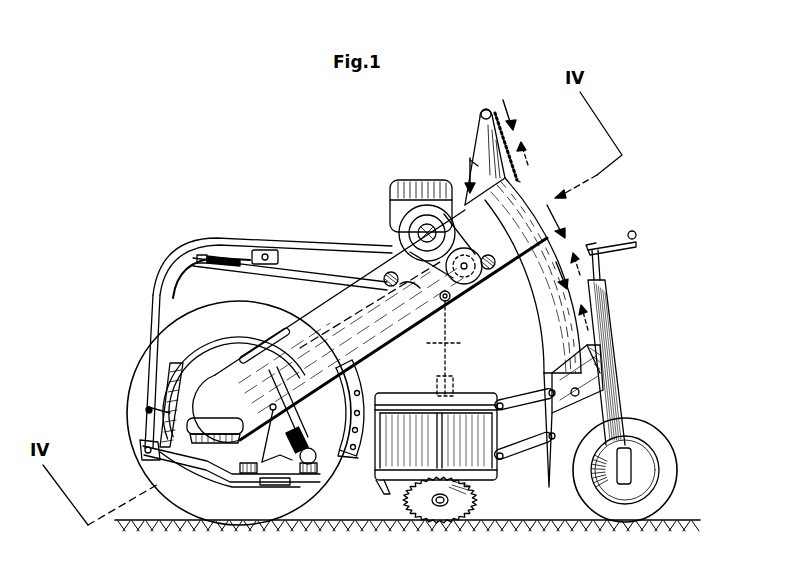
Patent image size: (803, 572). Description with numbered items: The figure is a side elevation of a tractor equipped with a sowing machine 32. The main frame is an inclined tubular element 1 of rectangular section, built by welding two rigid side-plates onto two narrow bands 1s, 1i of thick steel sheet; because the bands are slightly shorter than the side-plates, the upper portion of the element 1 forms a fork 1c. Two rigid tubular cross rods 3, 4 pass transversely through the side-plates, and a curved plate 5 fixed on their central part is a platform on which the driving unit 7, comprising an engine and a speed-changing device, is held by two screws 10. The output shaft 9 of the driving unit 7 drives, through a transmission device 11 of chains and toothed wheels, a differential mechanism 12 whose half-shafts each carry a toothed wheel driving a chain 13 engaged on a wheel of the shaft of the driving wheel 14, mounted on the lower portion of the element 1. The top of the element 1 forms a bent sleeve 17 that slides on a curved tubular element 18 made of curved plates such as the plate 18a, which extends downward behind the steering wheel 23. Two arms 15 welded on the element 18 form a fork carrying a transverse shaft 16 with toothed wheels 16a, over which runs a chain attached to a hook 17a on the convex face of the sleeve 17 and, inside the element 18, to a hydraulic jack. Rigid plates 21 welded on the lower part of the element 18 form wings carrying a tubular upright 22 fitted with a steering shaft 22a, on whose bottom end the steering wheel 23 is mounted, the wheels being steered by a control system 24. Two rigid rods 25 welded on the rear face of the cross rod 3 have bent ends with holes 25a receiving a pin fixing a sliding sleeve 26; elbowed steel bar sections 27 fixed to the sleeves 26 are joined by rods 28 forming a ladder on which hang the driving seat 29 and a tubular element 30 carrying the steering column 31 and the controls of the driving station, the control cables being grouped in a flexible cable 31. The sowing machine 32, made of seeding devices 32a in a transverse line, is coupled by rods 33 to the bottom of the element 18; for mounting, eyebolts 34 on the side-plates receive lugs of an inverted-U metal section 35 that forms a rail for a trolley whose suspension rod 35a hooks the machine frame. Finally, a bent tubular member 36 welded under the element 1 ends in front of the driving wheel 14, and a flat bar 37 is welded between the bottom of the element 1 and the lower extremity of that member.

The tubular element 1 is at (323, 306).
The fork 1c is at (475, 163).
The narrow band 1i is at (392, 448).
The narrow band 1s is at (272, 342).
The cross rod 3 is at (392, 287).
The cross rod 4 is at (488, 270).
The curved plate 5 is at (416, 286).
The driving unit 7 is at (413, 181).
The output shaft 9 is at (418, 235).
The screws 10 is at (450, 300).
The transmission device 11 is at (462, 173).
The differential mechanism 12 is at (470, 262).
The chain 13 is at (350, 330).
The driving wheel 14 is at (135, 440).
The arms 15 is at (480, 130).
The transverse shaft 16 is at (483, 109).
The toothed wheels 16a is at (498, 108).
The bent sleeve 17 is at (560, 186).
The hook 17a is at (528, 196).
The tubular element 18 is at (552, 328).
The curved plate 18a is at (551, 487).
The rigid plates 21 is at (582, 372).
The tubular upright 22 is at (606, 320).
The steering shaft 22a is at (602, 268).
The steering wheel 23 is at (668, 442).
The steering control system 24 is at (610, 247).
The rigid rods 25 is at (300, 268).
The holes 25a is at (237, 257).
The sleeve 26 is at (272, 250).
The steel bar sections 27 is at (158, 345).
The rods 28 is at (145, 411).
The driving seat 29 is at (192, 400).
The tubular element 30 is at (173, 470).
The steering column 31 is at (320, 238).
The sowing machine 32 is at (503, 402).
The seeding devices 32a is at (375, 484).
The rods 33 is at (508, 410).
The eyebolts 34 is at (458, 312).
The metal section 35 is at (430, 344).
The suspension rod 35a is at (480, 380).
The bent tubular member 36 is at (362, 378).
The flat bar 37 is at (311, 410).